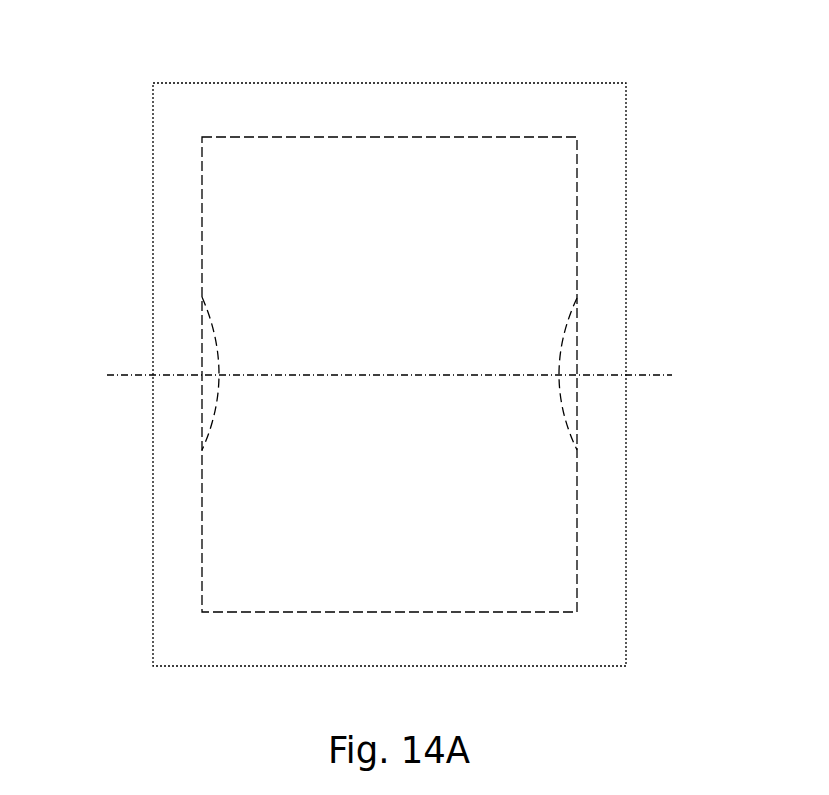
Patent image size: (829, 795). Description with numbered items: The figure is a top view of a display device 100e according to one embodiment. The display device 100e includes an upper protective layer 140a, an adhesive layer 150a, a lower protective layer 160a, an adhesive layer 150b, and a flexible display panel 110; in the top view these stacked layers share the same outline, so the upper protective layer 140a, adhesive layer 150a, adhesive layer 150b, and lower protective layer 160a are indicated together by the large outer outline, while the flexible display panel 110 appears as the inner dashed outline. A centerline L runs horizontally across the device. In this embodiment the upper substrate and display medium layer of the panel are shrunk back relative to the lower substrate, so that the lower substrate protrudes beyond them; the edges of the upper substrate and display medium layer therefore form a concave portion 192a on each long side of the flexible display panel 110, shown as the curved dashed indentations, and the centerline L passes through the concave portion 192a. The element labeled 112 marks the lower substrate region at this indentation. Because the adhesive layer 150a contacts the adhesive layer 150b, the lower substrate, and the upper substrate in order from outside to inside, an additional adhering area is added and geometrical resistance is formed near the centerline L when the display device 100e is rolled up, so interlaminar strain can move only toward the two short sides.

The display device 100e is at (108, 26).
The upper protective layer 140a is at (443, 103).
The adhesive layer 150a is at (389, 374).
The adhesive layer 150b is at (389, 374).
The lower protective layer 160a is at (389, 374).
The flexible display panel 110 is at (214, 563).
The edge portion 112 is at (202, 413).
The concave portion 192a is at (215, 340).
The centerline L is at (376, 376).